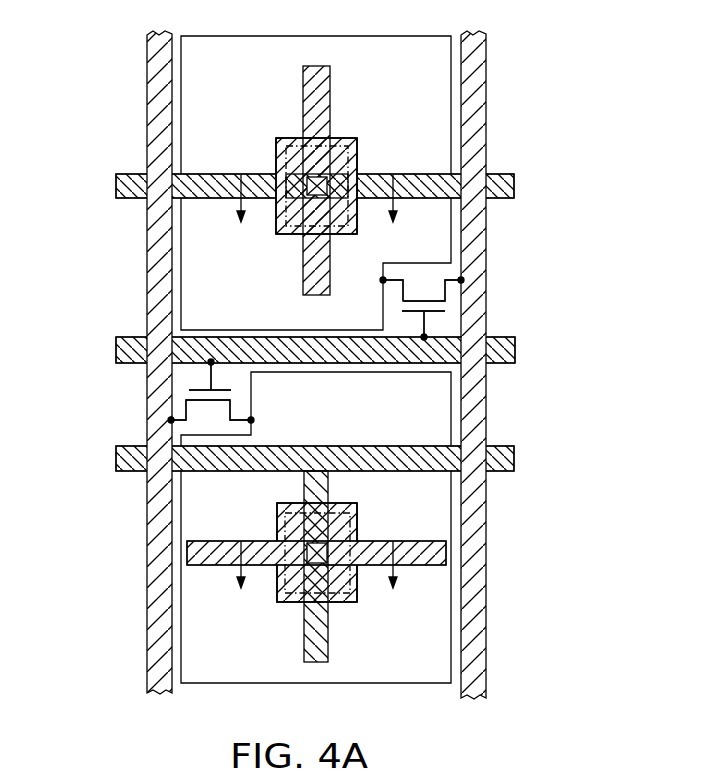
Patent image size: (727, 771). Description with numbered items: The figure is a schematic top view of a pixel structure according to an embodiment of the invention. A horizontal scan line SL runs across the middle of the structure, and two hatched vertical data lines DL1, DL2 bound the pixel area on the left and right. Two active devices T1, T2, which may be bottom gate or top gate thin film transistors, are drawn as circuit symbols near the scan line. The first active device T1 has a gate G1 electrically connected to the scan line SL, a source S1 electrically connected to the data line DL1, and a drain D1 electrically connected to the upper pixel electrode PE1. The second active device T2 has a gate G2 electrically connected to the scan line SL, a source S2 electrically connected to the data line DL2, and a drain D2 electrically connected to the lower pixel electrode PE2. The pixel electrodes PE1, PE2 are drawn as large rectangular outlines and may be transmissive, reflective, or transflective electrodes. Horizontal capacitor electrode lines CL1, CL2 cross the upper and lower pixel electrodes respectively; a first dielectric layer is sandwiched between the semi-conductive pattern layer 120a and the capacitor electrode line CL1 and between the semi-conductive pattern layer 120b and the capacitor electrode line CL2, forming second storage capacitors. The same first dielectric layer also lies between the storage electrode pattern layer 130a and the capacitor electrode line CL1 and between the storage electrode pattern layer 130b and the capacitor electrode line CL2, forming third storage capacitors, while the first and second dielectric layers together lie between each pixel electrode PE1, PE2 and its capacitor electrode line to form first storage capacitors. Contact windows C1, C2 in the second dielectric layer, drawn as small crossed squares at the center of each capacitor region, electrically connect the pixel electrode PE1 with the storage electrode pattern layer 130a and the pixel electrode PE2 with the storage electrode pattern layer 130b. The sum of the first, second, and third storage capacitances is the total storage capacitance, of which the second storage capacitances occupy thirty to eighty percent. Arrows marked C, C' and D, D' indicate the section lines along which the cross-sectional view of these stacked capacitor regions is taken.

The data line DL1 is at (152, 68).
The data line DL2 is at (480, 68).
The pixel electrode PE1 is at (451, 88).
The pixel electrode PE2 is at (451, 410).
The capacitor electrode line CL1 is at (513, 183).
The capacitor electrode line CL2 is at (514, 458).
The scan line SL is at (118, 355).
The storage electrode pattern layer 130a is at (292, 138).
The storage electrode pattern layer 130b is at (280, 525).
The semi-conductive pattern layer 120a is at (360, 155).
The semi-conductive pattern layer 120b is at (343, 600).
The contact window C1 is at (330, 147).
The contact window C2 is at (343, 516).
The active device T1 is at (67, 370).
The active device T2 is at (555, 233).
The gate G1 is at (210, 378).
The source S1 is at (186, 418).
The drain D1 is at (240, 428).
The gate G2 is at (440, 318).
The source S2 is at (445, 288).
The drain D2 is at (397, 278).
The section line C-C' C is at (241, 212).
The section line C- C' is at (396, 212).
The section line D-D' D is at (241, 578).
The section line D- D' is at (396, 578).